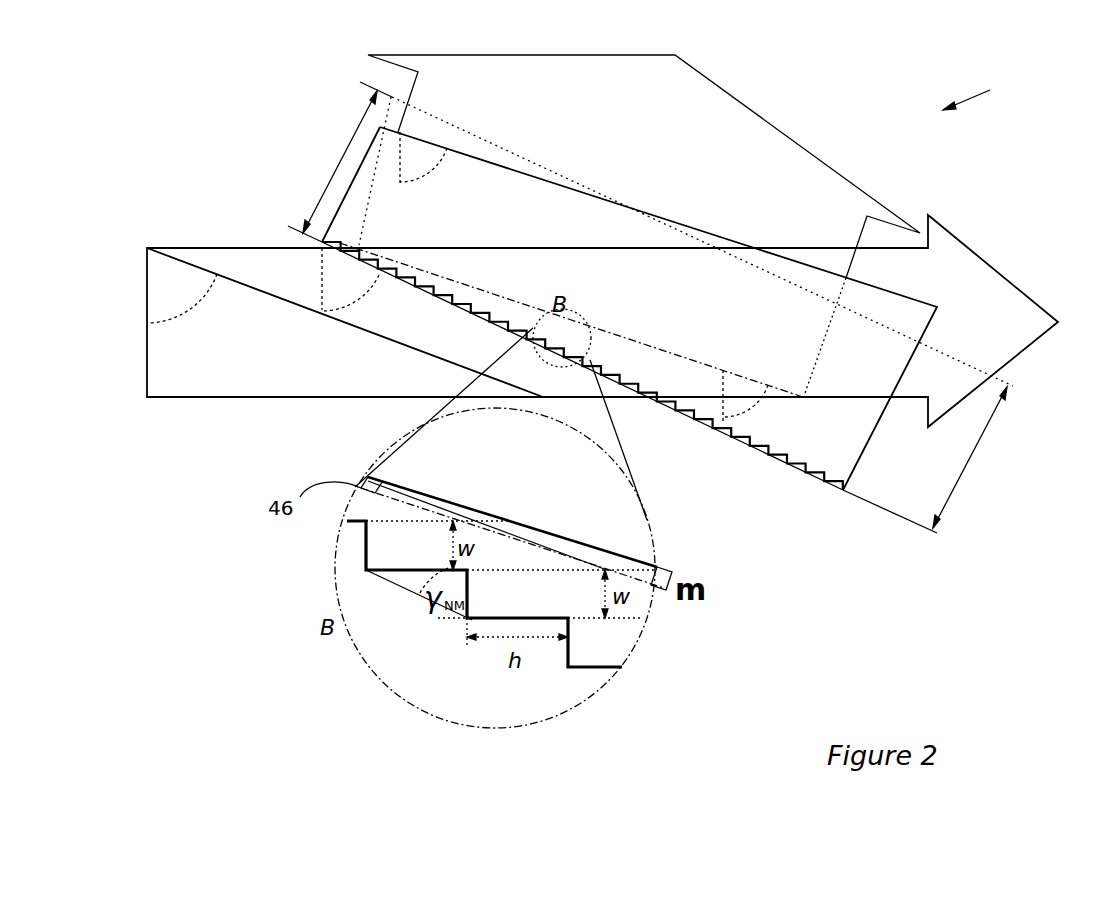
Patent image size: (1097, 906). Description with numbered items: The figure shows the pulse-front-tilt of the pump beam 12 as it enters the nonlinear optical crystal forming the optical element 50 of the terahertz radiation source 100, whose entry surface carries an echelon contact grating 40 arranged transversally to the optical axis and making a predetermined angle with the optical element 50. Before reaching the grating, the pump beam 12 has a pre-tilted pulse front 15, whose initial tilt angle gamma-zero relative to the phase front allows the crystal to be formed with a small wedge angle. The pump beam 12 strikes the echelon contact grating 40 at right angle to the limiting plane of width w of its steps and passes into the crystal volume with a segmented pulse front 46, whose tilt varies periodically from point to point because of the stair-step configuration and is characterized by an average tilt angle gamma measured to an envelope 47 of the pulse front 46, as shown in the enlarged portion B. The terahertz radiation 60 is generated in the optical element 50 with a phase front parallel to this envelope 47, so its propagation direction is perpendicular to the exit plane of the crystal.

The radiation source 100 is at (989, 95).
The pump beam 12 is at (978, 277).
The pulse front 15 is at (350, 326).
The terahertz radiation 60 is at (723, 112).
The optical element 50 is at (650, 307).
The segmented pulse front 46 is at (660, 350).
The envelope 47 is at (562, 535).
The echelon contact grating 40 is at (618, 642).